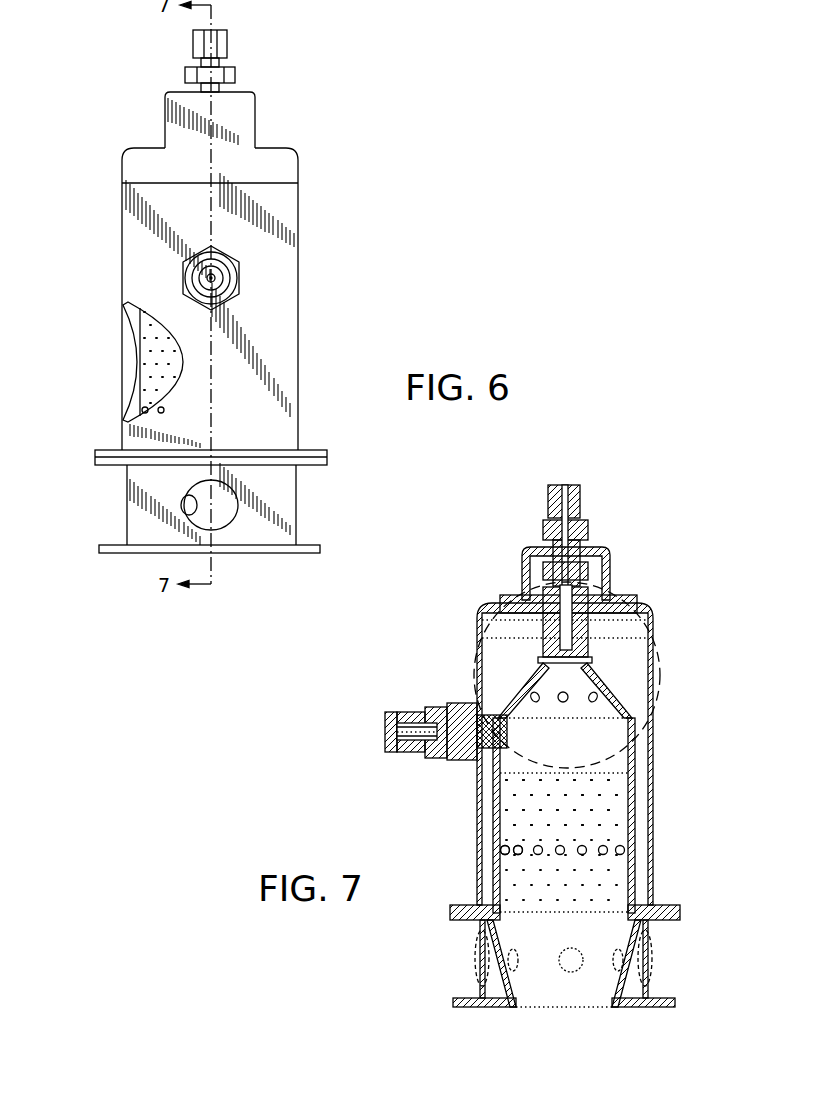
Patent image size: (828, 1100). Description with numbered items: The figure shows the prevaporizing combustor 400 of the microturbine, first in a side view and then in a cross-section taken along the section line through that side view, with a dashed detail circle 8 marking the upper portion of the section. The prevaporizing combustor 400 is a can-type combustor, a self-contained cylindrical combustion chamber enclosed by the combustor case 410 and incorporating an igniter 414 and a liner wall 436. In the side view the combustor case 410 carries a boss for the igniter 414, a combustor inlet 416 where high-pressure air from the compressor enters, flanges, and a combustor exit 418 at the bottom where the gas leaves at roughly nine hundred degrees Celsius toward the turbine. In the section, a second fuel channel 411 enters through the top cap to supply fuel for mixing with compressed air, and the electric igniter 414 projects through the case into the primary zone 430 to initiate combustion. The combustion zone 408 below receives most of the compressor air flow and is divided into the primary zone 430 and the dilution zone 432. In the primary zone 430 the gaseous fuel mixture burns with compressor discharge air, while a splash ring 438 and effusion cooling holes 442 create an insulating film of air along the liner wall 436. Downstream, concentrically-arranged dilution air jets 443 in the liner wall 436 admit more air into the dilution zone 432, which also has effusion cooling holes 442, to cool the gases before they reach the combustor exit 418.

In FIG. 7, the detail circle 8 is at (470, 670).
In FIG. 6, the prevaporizing combustor 400 is at (298, 193).
In FIG. 7, the prevaporizing combustor 400 is at (477, 627).
In FIG. 7, the combustion zone 408 is at (612, 812).
In FIG. 6, the combustor case 410 is at (270, 257).
In FIG. 7, the second fuel channel 411 is at (563, 485).
In FIG. 7, the igniter 414 is at (410, 722).
In FIG. 6, the combustor inlet 416 is at (126, 312).
In FIG. 6, the combustor exit 418 is at (245, 553).
In FIG. 7, the combustor exit 418 is at (535, 1008).
In FIG. 7, the primary zone 430 is at (633, 722).
In FIG. 7, the dilution zone 432 is at (626, 851).
In FIG. 6, the liner wall 436 is at (148, 366).
In FIG. 7, the liner wall 436 is at (490, 873).
In FIG. 7, the splash ring 438 is at (610, 773).
In FIG. 7, the effusion cooling holes 442 is at (508, 826).
In FIG. 7, the dilution air jets 443 is at (506, 852).